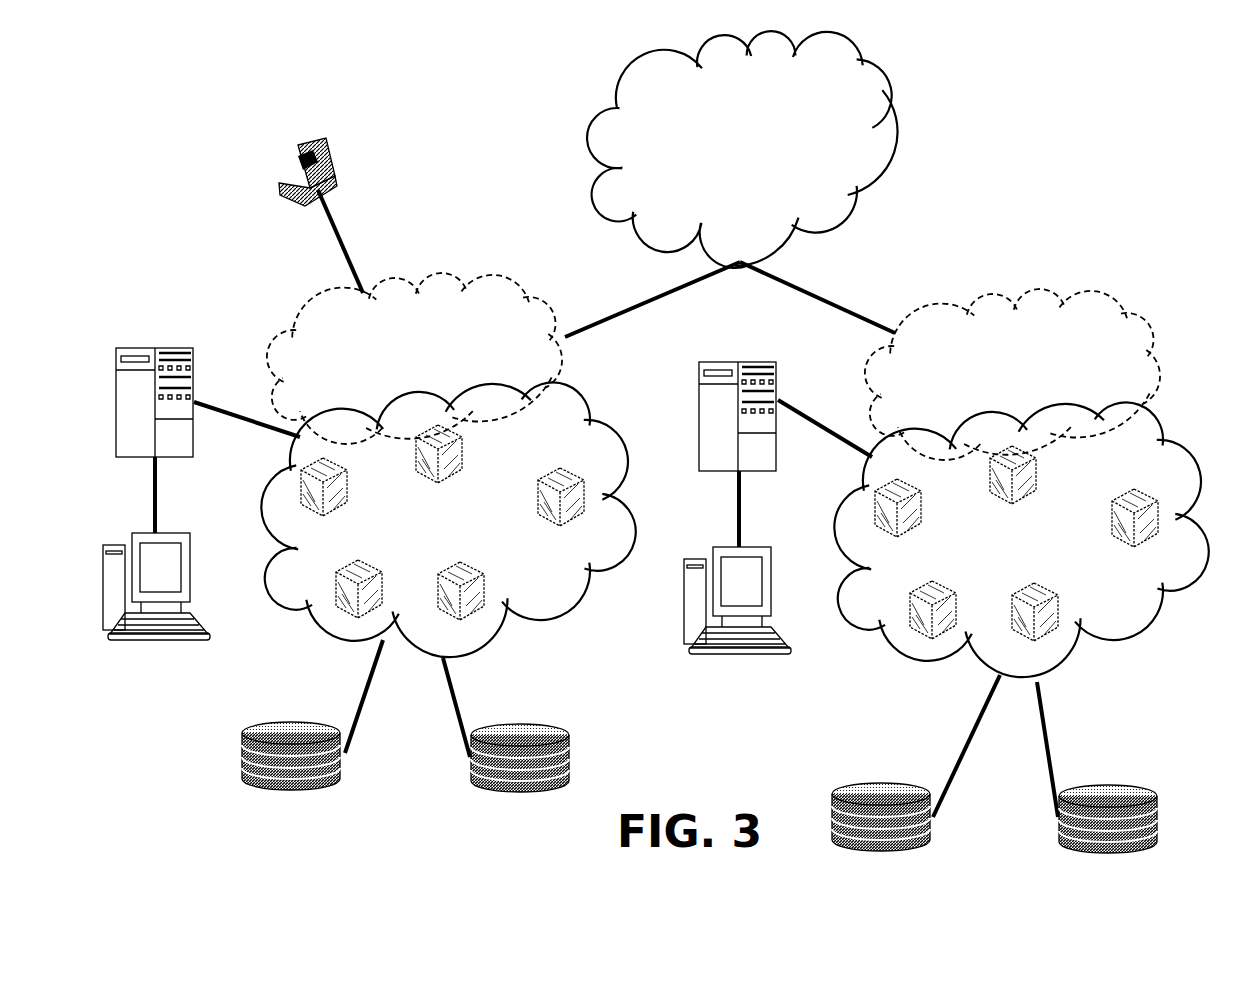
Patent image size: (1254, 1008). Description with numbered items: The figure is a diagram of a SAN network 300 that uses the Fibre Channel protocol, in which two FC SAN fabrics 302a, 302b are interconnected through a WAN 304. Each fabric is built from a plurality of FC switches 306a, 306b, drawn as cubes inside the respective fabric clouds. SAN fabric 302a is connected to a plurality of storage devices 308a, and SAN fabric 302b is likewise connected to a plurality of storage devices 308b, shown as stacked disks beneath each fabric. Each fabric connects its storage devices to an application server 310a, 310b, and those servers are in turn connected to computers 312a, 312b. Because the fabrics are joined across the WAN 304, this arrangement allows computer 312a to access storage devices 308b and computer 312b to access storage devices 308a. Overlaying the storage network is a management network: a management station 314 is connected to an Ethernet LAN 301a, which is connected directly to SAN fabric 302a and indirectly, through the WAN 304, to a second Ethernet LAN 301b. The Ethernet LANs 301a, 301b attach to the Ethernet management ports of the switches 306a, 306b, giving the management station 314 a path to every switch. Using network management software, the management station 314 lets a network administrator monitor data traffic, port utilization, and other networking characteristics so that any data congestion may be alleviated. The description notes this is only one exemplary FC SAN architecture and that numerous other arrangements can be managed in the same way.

The SAN network 300 is at (1054, 140).
The Ethernet LAN 301a is at (553, 306).
The Ethernet LAN 301b is at (1132, 307).
The FC SAN fabric 302a is at (590, 397).
The FC SAN fabric 302b is at (1162, 419).
The WAN 304 is at (893, 102).
The FC switches 306a is at (342, 471).
The FC switches 306b is at (916, 492).
The storage devices 308a is at (291, 727).
The storage devices 308b is at (879, 788).
The application server 310a is at (184, 347).
The application server 310b is at (752, 361).
The computer 312a is at (183, 532).
The computer 312b is at (763, 547).
The management station 314 is at (318, 138).